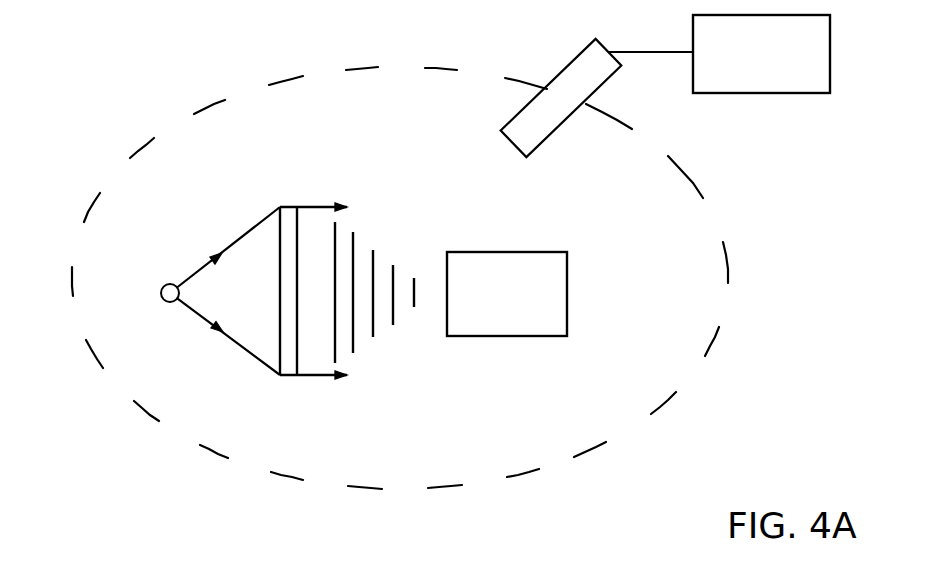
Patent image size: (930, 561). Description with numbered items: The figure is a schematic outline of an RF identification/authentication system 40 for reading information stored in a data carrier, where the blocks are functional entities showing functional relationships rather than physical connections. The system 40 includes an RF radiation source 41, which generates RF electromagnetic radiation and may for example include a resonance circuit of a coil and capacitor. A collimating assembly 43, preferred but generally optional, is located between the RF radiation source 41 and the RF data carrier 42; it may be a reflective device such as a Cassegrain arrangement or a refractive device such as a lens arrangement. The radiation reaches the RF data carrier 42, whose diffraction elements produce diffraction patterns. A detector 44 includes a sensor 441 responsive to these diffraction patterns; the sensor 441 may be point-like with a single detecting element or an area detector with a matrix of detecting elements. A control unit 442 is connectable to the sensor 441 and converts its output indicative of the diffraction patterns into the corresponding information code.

The identification system 40 is at (148, 92).
The RF radiation source 41 is at (167, 302).
The RF data carrier 42 is at (505, 336).
The collimating assembly 43 is at (285, 375).
The detector 44 is at (620, 124).
The sensor 441 is at (513, 118).
The control unit 442 is at (761, 79).